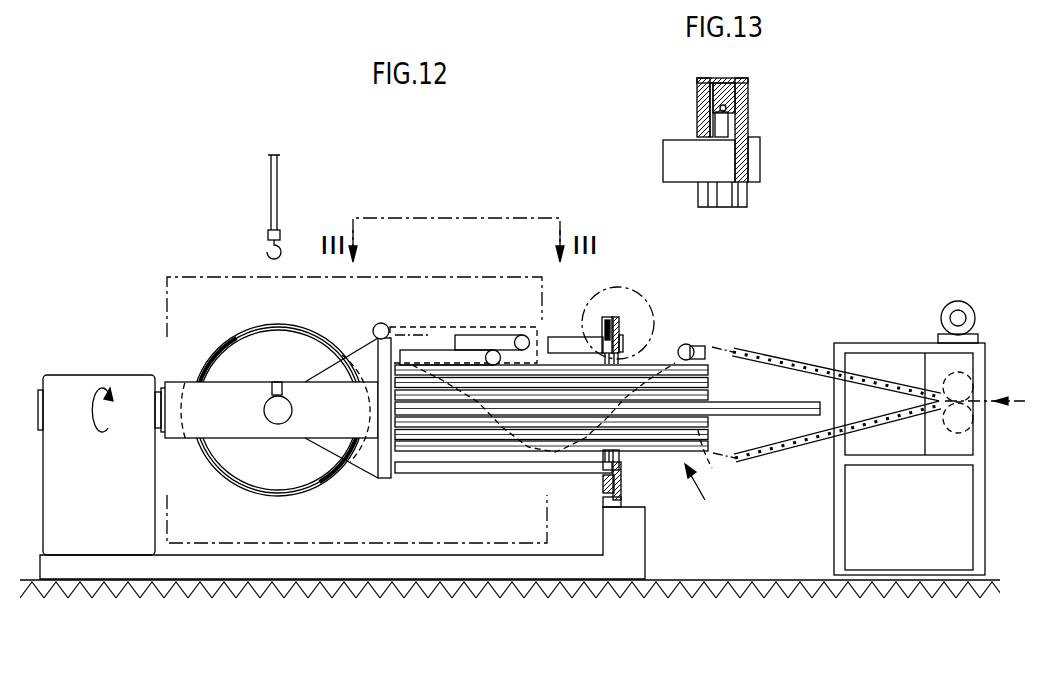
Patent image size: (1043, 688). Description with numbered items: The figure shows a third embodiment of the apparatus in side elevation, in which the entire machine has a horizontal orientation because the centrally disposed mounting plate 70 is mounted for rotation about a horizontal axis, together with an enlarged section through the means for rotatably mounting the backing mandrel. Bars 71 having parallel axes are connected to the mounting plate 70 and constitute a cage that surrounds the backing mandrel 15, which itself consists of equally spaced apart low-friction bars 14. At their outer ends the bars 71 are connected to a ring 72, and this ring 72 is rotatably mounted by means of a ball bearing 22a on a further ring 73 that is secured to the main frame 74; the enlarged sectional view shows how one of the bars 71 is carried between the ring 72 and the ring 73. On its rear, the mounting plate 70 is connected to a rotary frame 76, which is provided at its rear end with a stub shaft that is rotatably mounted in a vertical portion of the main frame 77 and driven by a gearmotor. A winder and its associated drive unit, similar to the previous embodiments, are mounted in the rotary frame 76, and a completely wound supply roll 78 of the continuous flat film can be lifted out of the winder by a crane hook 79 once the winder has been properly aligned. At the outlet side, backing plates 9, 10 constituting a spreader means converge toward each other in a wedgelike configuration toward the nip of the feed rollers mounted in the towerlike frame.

In FIG. 12, the backing plate 9 is at (797, 445).
In FIG. 12, the backing plate 10 is at (783, 357).
In FIG. 12, the low-friction bar 14 is at (693, 433).
In FIG. 12, the backing mandrel 15 is at (707, 493).
In FIG. 12, the ball bearing 22a is at (618, 500).
In FIG. 12, the mounting plate 70 is at (383, 478).
In FIG. 12, the bar 71 is at (567, 345).
In FIG. 13, the bar 71 is at (672, 163).
In FIG. 12, the ring 72 is at (623, 488).
In FIG. 13, the ring 72 is at (750, 175).
In FIG. 12, the ring 73 is at (604, 325).
In FIG. 13, the ring 73 is at (697, 118).
In FIG. 12, the main frame 74 is at (640, 557).
In FIG. 12, the rotary frame 76 is at (184, 438).
In FIG. 12, the main frame 77 is at (73, 384).
In FIG. 12, the supply roll 78 is at (215, 360).
In FIG. 12, the crane hook 79 is at (268, 246).